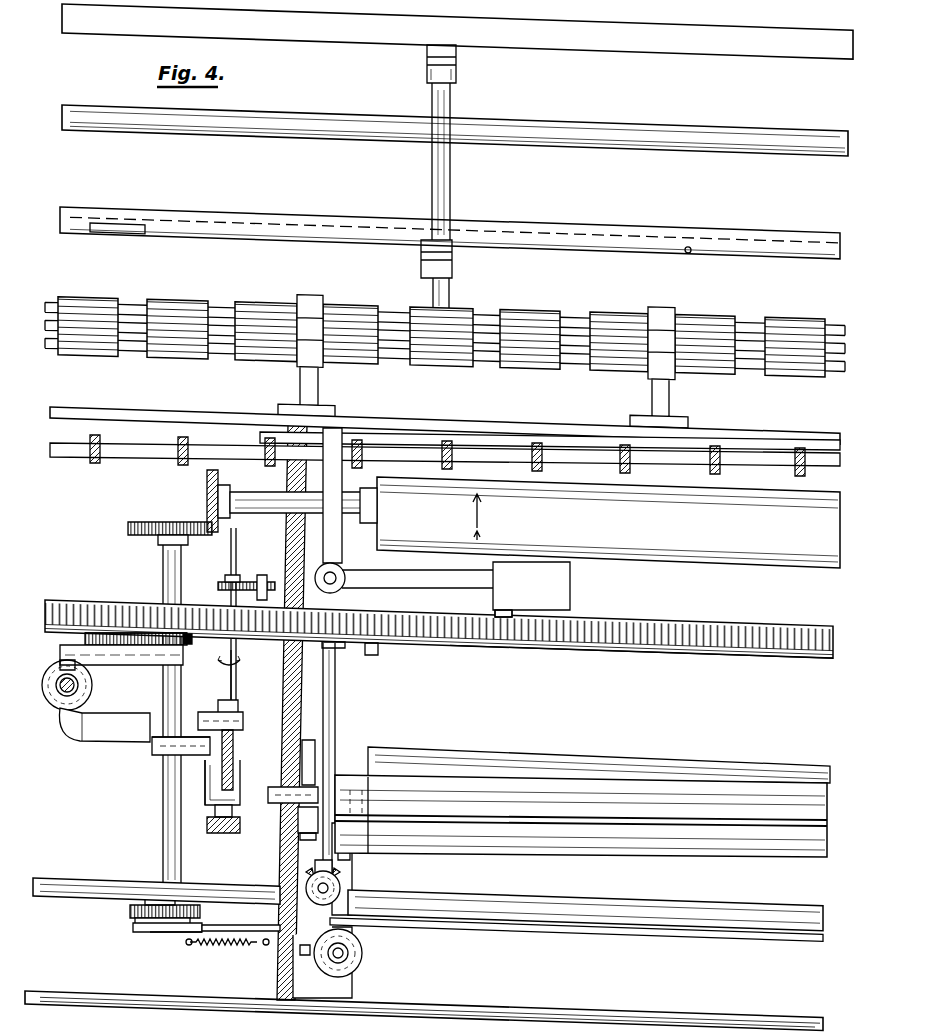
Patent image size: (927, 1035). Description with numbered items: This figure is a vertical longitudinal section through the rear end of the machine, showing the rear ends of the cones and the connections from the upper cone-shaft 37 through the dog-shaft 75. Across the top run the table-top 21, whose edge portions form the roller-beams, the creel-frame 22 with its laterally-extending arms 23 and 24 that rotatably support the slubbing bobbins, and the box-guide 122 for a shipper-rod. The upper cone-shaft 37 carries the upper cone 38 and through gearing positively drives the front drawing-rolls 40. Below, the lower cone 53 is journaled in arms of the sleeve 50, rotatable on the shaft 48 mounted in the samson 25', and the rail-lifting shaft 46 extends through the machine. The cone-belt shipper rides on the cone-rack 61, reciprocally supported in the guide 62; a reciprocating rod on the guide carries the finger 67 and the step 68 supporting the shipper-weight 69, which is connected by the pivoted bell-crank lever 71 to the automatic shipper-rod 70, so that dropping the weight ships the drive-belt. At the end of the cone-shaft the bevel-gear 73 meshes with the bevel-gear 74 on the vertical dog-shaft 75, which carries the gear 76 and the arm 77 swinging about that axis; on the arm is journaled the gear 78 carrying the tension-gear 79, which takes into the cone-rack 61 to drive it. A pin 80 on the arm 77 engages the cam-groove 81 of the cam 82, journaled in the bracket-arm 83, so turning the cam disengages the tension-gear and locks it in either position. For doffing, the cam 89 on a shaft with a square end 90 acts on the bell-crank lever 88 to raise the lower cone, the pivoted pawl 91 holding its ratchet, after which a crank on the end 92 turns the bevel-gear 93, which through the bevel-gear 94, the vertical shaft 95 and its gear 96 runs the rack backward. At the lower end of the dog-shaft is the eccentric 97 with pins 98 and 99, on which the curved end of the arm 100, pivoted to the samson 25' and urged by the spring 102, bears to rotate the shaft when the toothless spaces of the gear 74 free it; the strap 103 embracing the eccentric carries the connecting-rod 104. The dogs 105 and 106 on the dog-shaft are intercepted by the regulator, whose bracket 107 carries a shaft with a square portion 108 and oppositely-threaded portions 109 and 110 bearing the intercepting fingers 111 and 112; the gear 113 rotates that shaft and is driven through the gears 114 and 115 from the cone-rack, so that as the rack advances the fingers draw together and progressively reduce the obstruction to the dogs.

The table-top 21 is at (735, 437).
The creel-frame 22 is at (441, 306).
The laterally-extending arms 23 is at (453, 48).
The laterally-extending arms 24 is at (449, 250).
The samson 25' is at (268, 712).
The upper cone-shaft 37 is at (273, 514).
The upper cone 38 is at (600, 522).
The front drawing-rolls 40 is at (183, 353).
The rail-lifting shaft 46 is at (55, 884).
The shaft 48 is at (244, 823).
The sleeve 50 is at (581, 816).
The lower cone 53 is at (599, 765).
The cone-rack 61 is at (606, 648).
The guide 62 is at (678, 652).
The finger 67 is at (371, 655).
The step 68 is at (493, 611).
The shipper-weight 69 is at (531, 589).
The automatic shipper-rod 70 is at (822, 455).
The pivoted bell-crank lever 71 is at (336, 538).
The bevel-gear 73 is at (207, 487).
The bevel-gear 74 is at (137, 524).
The dog-shaft 75 is at (182, 554).
The gear 76 is at (189, 640).
The arm 77 is at (146, 656).
The gear 78 is at (85, 638).
The tension-gear 79 is at (121, 630).
The pin 80 is at (60, 664).
The cam-groove 81 is at (79, 686).
The cam 82 is at (50, 700).
The bracket-arm 83 is at (89, 742).
The bell-crank lever 88 is at (345, 848).
The cam 89 is at (357, 941).
The square end 90 is at (352, 964).
The pivoted pawl 91 is at (308, 740).
The end of shaft 92 is at (349, 876).
The bevel-gear 93 is at (306, 884).
The bevel-gear 94 is at (312, 870).
The vertical shaft 95 is at (336, 766).
The gear 96 is at (336, 628).
The eccentric 97 is at (134, 921).
The pin 98 is at (141, 932).
The pin 99 is at (166, 932).
The arm 100 is at (156, 931).
The spring 102 is at (223, 945).
The strap 103 is at (130, 911).
The connecting-rod 104 is at (524, 927).
The dog 105 is at (155, 753).
The dog 106 is at (192, 735).
The bracket 107 is at (235, 752).
The square portion of shaft 108 is at (236, 686).
The threaded portion 109 is at (241, 723).
The threaded portion 110 is at (243, 780).
The intercepting finger 111 is at (229, 692).
The intercepting finger 112 is at (208, 780).
The gear 113 is at (209, 615).
The gear 114 is at (255, 580).
The gear 115 is at (245, 651).
The box-guide 122 is at (346, 234).